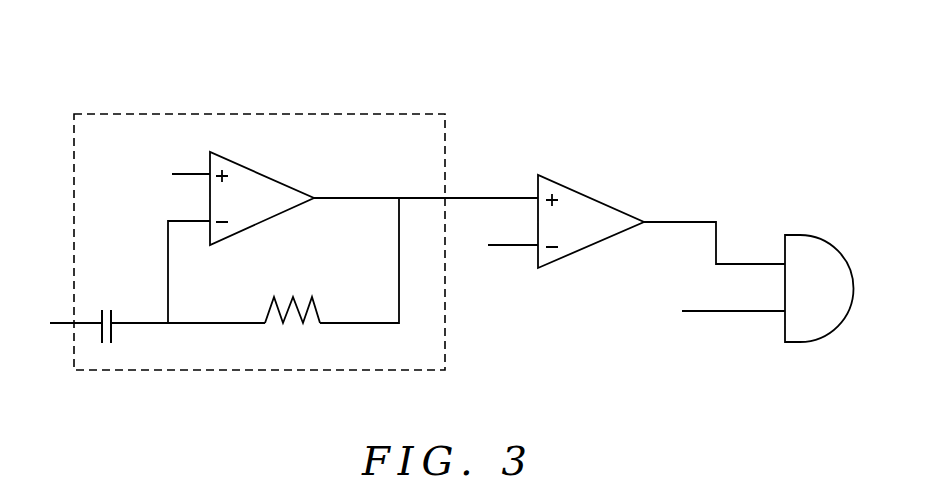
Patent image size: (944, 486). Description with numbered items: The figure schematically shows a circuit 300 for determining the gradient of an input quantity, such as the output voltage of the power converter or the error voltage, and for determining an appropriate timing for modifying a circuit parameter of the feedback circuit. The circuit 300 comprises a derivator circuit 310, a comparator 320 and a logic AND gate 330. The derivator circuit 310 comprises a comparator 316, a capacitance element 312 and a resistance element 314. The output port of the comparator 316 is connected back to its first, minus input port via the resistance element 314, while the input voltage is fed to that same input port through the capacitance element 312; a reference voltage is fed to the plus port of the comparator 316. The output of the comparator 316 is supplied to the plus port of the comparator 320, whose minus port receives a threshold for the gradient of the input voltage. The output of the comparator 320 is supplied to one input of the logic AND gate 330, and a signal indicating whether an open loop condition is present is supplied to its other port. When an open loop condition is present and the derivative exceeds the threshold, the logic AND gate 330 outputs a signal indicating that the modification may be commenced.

The circuit 300 is at (84, 85).
The derivator circuit 310 is at (310, 112).
The capacitance element 312 is at (107, 353).
The resistance element 314 is at (292, 330).
The comparator 316 is at (257, 168).
The comparator 320 is at (585, 193).
The logic AND gate 330 is at (822, 240).